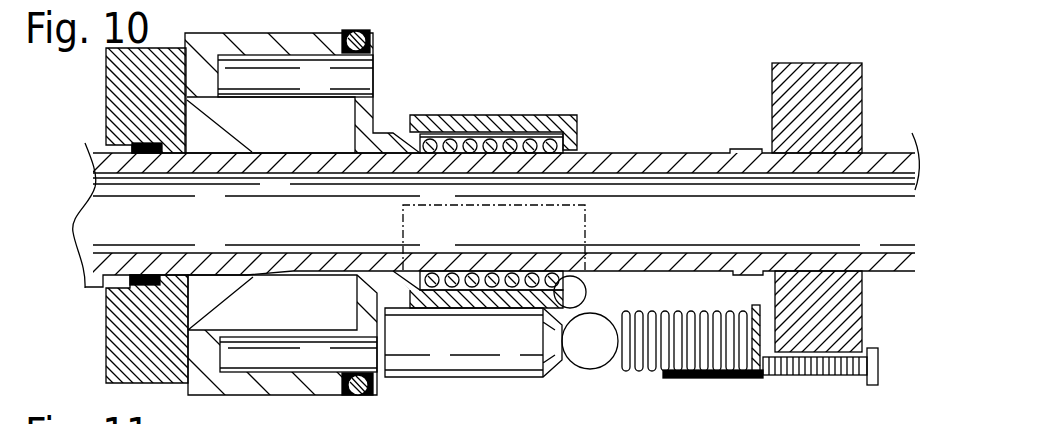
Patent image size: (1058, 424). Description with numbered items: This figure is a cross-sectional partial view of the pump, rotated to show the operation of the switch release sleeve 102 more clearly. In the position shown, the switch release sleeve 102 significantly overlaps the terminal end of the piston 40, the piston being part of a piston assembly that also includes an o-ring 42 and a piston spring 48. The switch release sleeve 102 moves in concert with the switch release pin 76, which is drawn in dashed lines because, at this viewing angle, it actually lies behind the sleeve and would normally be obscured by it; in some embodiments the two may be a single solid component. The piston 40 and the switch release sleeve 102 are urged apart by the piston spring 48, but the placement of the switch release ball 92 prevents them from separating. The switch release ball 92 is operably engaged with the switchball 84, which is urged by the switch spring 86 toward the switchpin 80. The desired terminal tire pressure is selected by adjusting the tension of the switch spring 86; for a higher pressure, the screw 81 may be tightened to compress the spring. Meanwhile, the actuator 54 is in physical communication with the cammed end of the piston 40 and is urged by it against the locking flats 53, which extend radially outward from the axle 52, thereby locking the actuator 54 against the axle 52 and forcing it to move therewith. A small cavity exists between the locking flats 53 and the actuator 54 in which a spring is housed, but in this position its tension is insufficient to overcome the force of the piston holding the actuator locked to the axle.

The piston 40 is at (386, 133).
The o-ring 42 is at (362, 25).
The piston spring 48 is at (510, 142).
The axle 52 is at (616, 152).
The locking flats 53 is at (125, 288).
The actuator 54 is at (106, 100).
The switch release pin 76 is at (588, 223).
The switchpin 80 is at (490, 349).
The screw 81 is at (876, 357).
The switchball 84 is at (607, 351).
The switch spring 86 is at (625, 372).
The switch release ball 92 is at (587, 294).
The switch release sleeve 102 is at (147, 147).